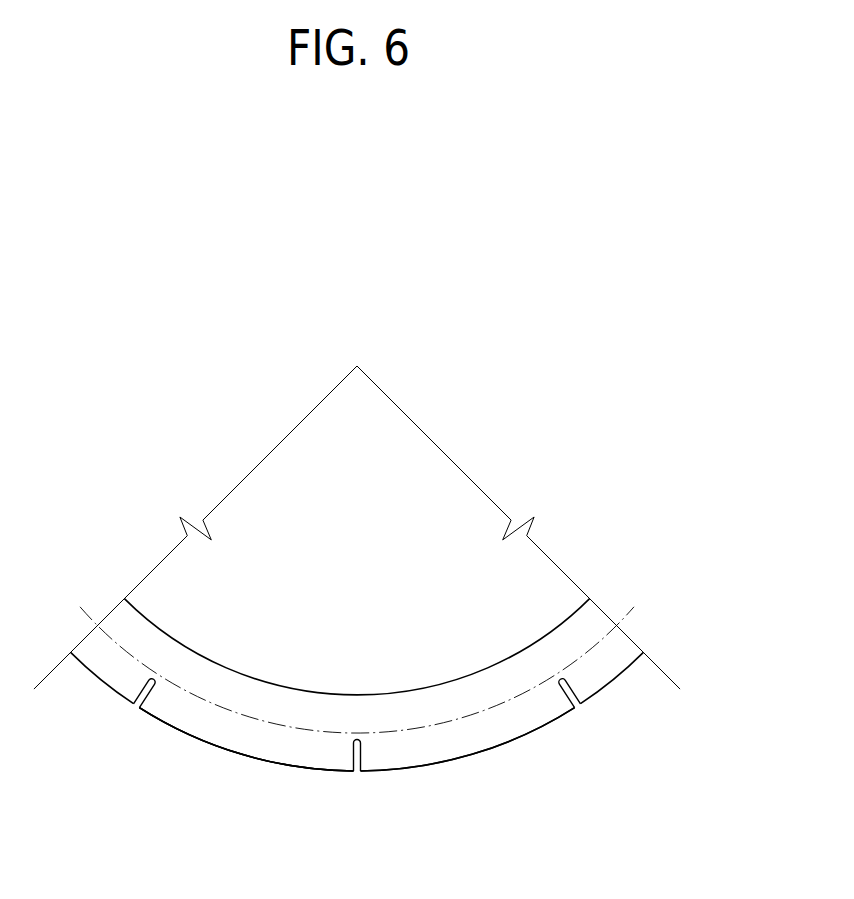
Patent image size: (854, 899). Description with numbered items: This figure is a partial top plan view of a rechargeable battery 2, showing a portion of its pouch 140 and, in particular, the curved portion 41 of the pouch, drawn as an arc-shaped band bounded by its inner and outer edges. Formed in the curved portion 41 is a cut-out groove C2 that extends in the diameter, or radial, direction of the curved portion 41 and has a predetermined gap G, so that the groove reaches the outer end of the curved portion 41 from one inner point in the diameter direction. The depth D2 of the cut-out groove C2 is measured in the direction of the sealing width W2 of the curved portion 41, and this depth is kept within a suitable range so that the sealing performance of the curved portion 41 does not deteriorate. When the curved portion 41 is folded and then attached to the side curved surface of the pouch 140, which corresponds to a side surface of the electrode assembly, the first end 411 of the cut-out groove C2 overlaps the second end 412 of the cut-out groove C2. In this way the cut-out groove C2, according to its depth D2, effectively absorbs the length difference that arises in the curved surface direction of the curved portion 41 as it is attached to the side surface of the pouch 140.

The rechargeable battery 2 is at (306, 325).
The pouch 140 is at (418, 468).
The curved portion 41 is at (609, 612).
The first end 411 is at (497, 736).
The second end 412 is at (257, 740).
The cut-out groove C2 is at (361, 755).
The sealing width W2 is at (473, 754).
The depth D2 is at (356, 740).
The gap G is at (360, 772).